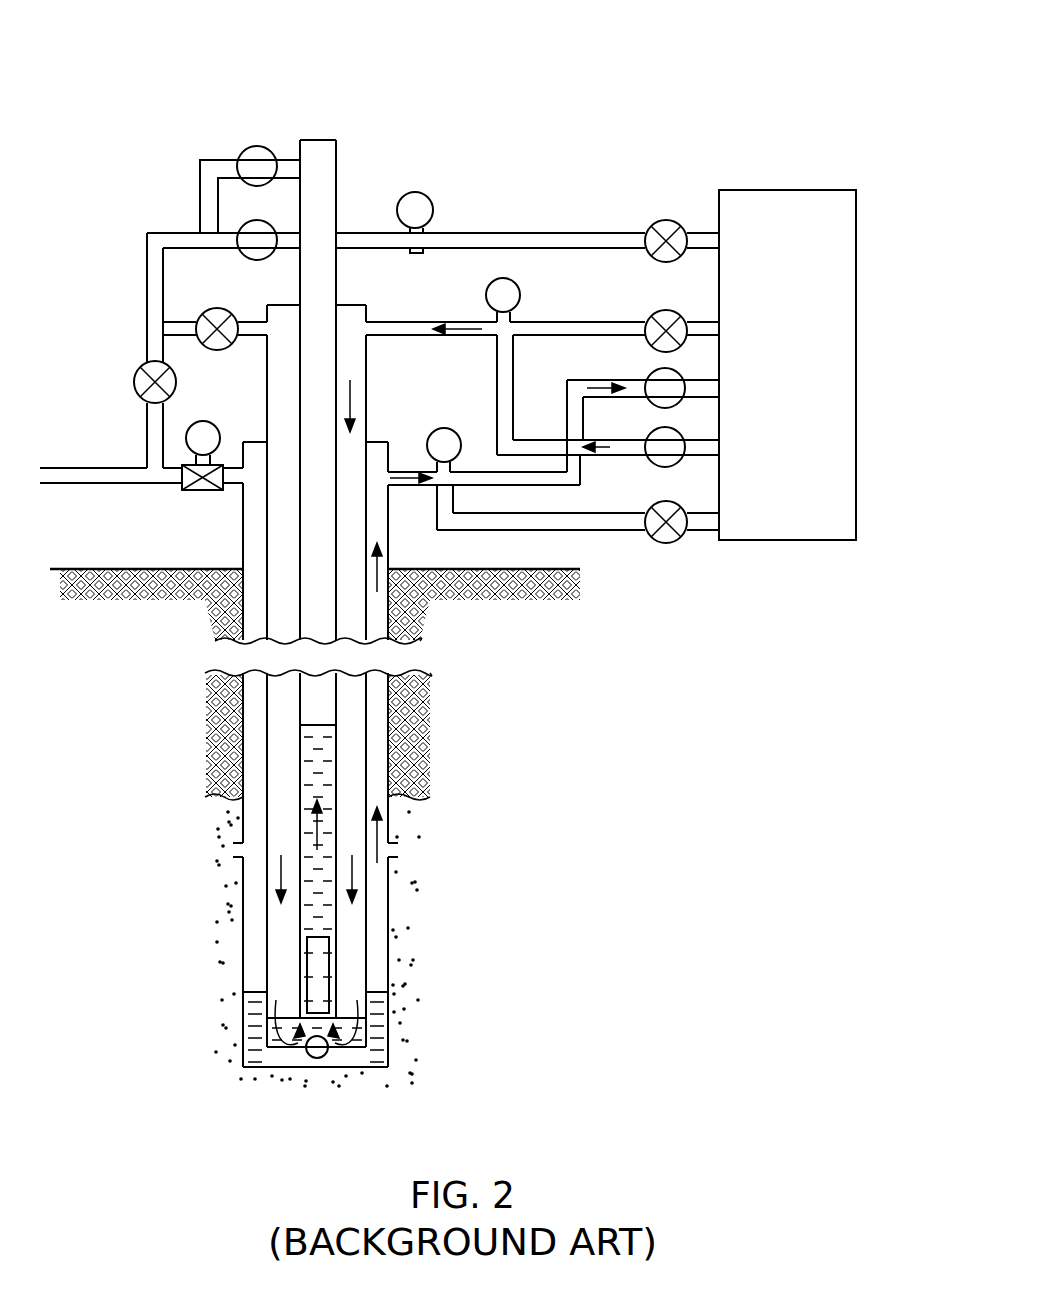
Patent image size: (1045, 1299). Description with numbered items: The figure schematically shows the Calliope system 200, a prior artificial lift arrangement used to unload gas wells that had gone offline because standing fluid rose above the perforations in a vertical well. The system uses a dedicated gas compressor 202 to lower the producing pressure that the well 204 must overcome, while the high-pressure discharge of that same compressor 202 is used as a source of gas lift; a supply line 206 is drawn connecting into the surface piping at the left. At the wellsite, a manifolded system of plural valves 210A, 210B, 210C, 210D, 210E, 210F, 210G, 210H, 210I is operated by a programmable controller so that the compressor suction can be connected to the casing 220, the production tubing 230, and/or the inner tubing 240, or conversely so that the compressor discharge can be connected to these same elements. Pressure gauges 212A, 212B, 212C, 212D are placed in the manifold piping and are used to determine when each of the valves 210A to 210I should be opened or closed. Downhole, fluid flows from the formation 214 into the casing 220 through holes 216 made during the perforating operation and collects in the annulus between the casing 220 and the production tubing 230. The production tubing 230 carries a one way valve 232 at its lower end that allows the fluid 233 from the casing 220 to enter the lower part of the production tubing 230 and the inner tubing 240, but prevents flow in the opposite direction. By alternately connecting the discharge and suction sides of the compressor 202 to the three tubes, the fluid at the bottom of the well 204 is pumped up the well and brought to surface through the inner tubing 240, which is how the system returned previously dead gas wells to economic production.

The Calliope system 200 is at (798, 30).
The gas compressor 202 is at (812, 374).
The well 204 is at (400, 963).
The supply line 206 is at (70, 466).
The valve 210A is at (666, 545).
The valve 210B is at (661, 468).
The valve 210C is at (648, 373).
The valve 210D is at (658, 312).
The valve 210E is at (667, 220).
The valve 210F is at (258, 146).
The valve 210G is at (261, 261).
The valve 210H is at (221, 351).
The valve 210I is at (134, 382).
The pressure gauge 212A is at (444, 428).
The pressure gauge 212B is at (489, 296).
The pressure gauge 212C is at (415, 192).
The pressure gauge 212D is at (203, 491).
The formation 214 is at (201, 746).
The holes 216 is at (236, 849).
The casing 220 is at (379, 922).
The production tubing 230 is at (352, 778).
The one way valve 232 is at (316, 1060).
The fluid 233 is at (381, 1041).
The inner tubing 240 is at (319, 713).